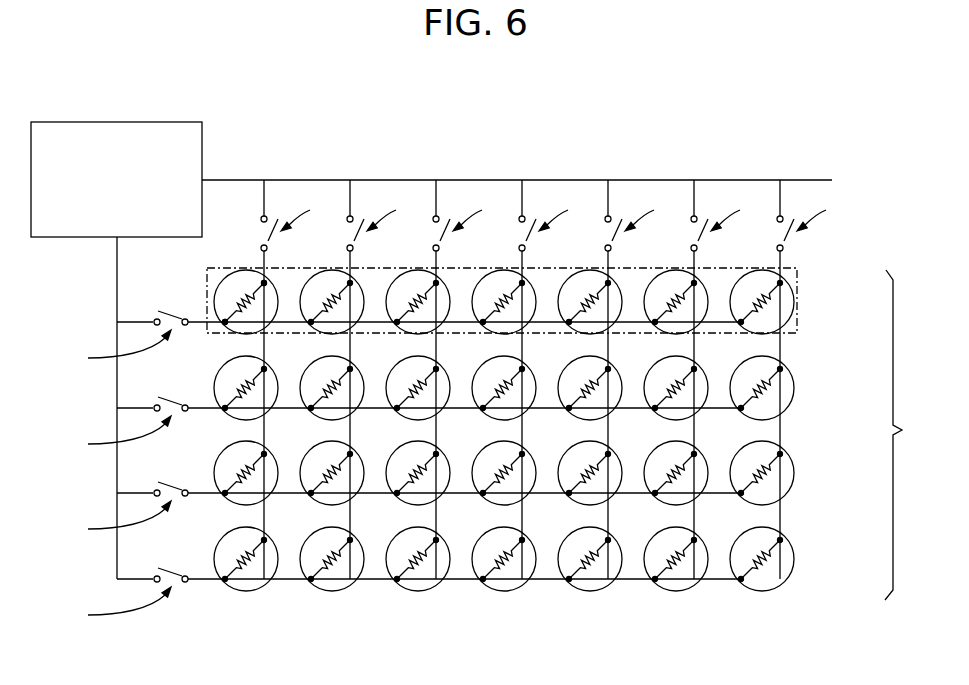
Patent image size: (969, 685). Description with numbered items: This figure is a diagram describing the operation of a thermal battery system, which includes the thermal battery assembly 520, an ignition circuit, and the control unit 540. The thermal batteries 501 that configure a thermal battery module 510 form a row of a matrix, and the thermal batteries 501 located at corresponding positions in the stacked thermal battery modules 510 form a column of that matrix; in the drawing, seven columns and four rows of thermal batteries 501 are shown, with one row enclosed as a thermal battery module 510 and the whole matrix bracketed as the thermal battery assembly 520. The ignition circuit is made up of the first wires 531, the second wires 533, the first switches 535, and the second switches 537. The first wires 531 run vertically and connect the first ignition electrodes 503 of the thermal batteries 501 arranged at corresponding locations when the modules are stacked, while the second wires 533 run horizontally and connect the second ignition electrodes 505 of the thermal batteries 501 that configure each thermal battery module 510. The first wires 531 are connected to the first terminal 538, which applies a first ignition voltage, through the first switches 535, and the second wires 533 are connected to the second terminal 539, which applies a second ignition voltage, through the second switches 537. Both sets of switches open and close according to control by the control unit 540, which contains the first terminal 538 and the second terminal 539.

The thermal battery 501 is at (794, 390).
The first ignition electrode 503 is at (263, 280).
The second ignition electrode 505 is at (217, 318).
The thermal battery module 510 is at (798, 301).
The thermal battery assembly 520 is at (917, 435).
The first wires 531 is at (265, 520).
The second wires 533 is at (727, 326).
The first switches 535 is at (562, 220).
The second switches 537 is at (115, 470).
The first terminal 538 is at (489, 166).
The second terminal 539 is at (114, 379).
The control unit 540 is at (113, 122).